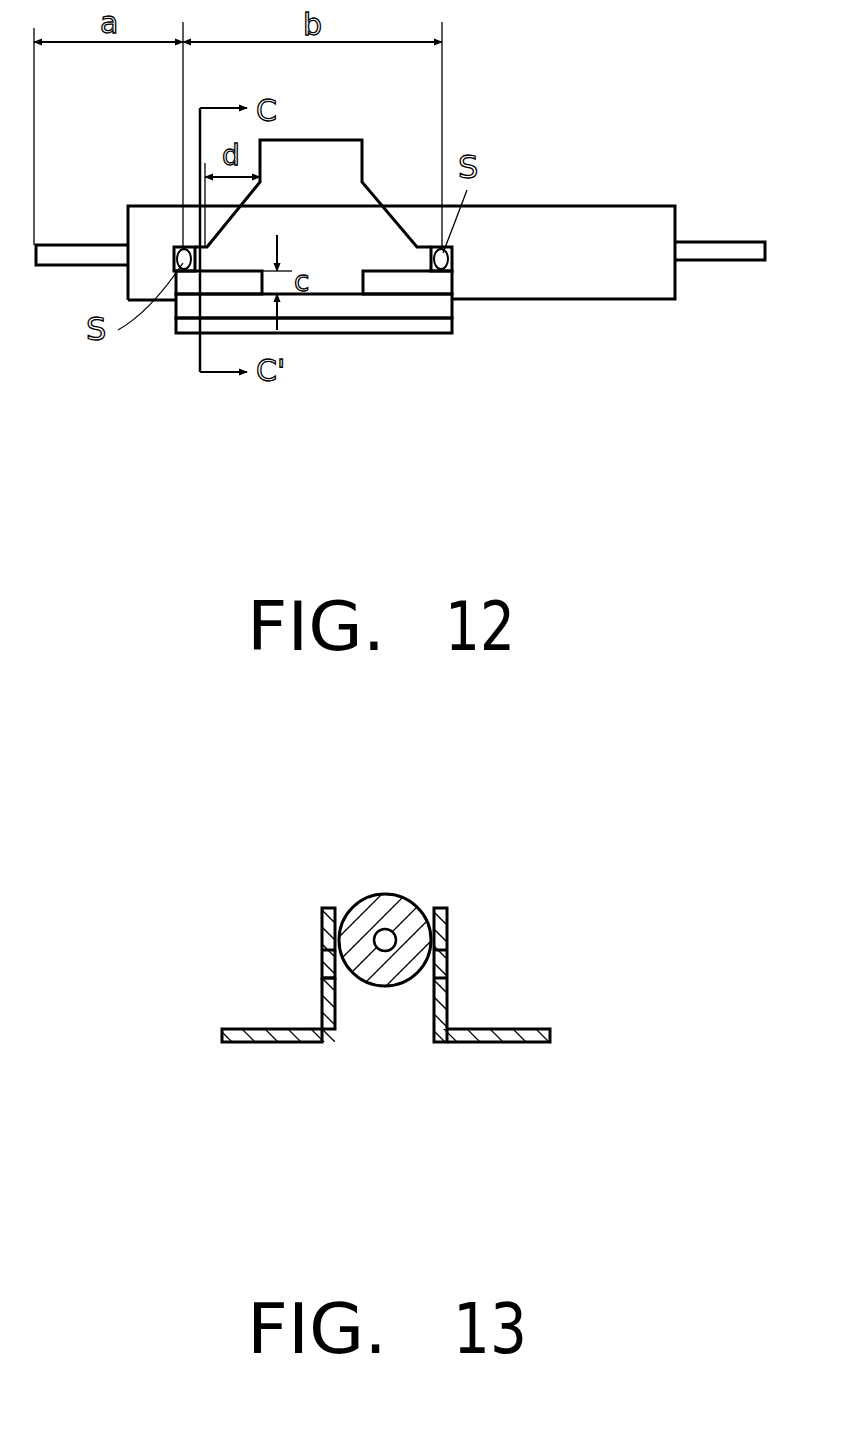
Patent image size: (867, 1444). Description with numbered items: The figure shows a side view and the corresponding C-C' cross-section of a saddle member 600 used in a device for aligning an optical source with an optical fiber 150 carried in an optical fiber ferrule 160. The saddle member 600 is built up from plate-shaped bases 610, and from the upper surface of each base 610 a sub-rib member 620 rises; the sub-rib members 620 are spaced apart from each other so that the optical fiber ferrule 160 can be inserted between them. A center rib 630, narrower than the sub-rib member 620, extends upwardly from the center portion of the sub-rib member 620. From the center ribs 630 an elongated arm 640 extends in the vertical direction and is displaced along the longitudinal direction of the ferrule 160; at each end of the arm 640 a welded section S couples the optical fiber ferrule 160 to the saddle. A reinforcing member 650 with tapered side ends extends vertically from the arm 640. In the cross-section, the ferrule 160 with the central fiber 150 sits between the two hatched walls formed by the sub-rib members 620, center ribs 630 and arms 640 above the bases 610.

In FIG. 12, the optical fiber 150 is at (703, 240).
In FIG. 13, the optical fiber 150 is at (378, 934).
In FIG. 12, the optical fiber ferrule 160 is at (569, 289).
In FIG. 13, the optical fiber ferrule 160 is at (383, 892).
In FIG. 12, the saddle member 600 is at (269, 290).
In FIG. 13, the saddle member 600 is at (385, 1051).
In FIG. 12, the plate-shaped base 610 is at (425, 325).
In FIG. 13, the plate-shaped base 610 is at (480, 1036).
In FIG. 12, the sub-rib member 620 is at (188, 305).
In FIG. 13, the sub-rib member 620 is at (328, 1010).
In FIG. 12, the center rib 630 is at (320, 283).
In FIG. 13, the center rib 630 is at (328, 958).
In FIG. 12, the elongated arm 640 is at (405, 255).
In FIG. 13, the elongated arm 640 is at (446, 928).
In FIG. 12, the reinforcing member 650 is at (333, 157).